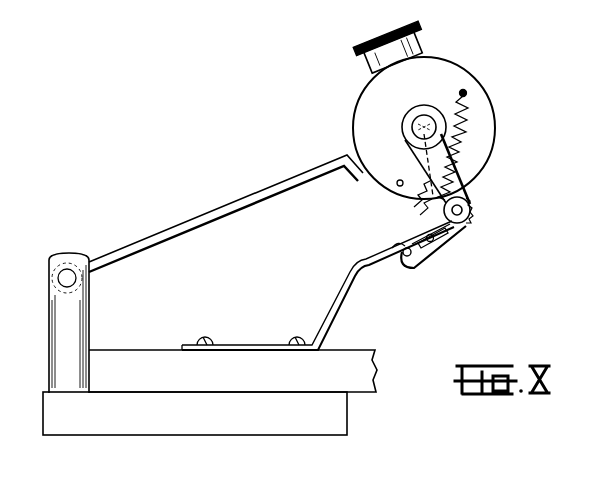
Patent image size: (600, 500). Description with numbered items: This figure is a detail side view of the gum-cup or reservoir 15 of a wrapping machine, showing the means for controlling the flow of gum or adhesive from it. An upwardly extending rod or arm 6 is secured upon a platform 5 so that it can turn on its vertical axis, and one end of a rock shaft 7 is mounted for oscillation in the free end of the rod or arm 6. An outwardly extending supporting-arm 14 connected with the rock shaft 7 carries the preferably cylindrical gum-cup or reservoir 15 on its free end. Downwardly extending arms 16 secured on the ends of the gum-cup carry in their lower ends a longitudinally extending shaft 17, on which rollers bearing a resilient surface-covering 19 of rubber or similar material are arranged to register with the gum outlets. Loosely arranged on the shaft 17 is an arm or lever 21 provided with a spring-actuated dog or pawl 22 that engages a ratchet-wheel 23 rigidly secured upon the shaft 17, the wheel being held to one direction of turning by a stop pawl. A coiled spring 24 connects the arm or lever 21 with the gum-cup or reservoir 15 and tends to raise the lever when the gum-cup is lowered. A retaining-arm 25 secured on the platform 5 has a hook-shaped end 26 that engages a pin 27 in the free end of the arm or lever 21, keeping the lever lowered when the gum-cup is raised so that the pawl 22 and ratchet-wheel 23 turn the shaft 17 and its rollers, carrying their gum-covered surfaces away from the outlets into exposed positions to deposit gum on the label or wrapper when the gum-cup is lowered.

The platform 5 is at (275, 420).
The rod or arm 6 is at (89, 318).
The rock shaft 7 is at (58, 283).
The supporting-arm 14 is at (155, 236).
The gum-cup or reservoir 15 is at (358, 100).
The downwardly extending arms 16 is at (455, 170).
The shaft 17 is at (471, 208).
The surface-covering 19 is at (474, 214).
The arm or lever 21 is at (425, 235).
The dog or pawl 22 is at (452, 228).
The ratchet-wheel 23 is at (430, 150).
The coiled spring 24 is at (470, 118).
The retaining-arm 25 is at (333, 317).
The hook-shaped end 26 is at (400, 245).
The pin 27 is at (406, 256).